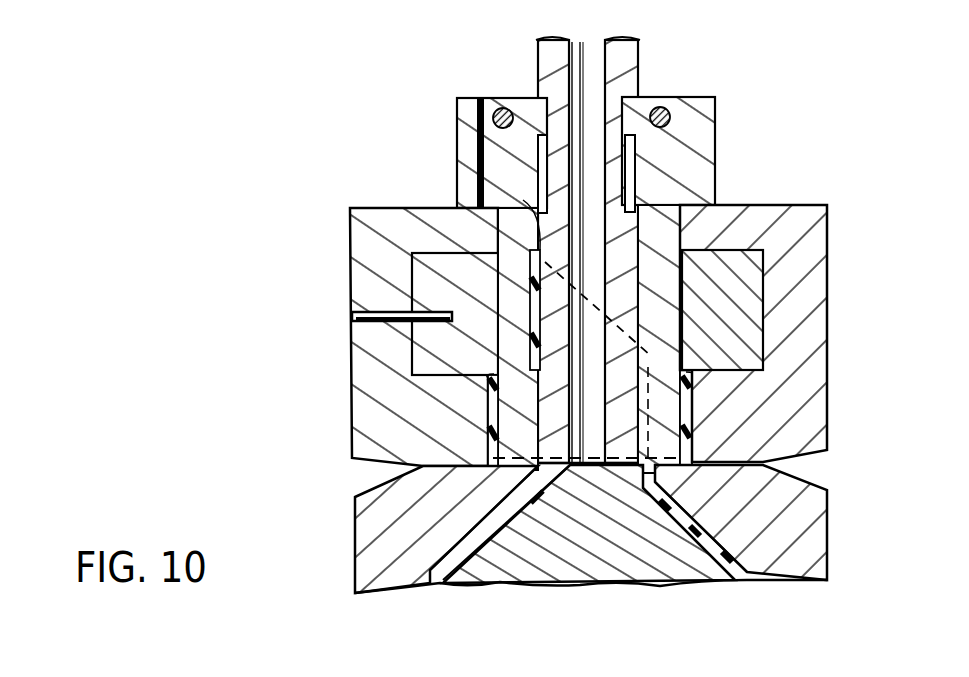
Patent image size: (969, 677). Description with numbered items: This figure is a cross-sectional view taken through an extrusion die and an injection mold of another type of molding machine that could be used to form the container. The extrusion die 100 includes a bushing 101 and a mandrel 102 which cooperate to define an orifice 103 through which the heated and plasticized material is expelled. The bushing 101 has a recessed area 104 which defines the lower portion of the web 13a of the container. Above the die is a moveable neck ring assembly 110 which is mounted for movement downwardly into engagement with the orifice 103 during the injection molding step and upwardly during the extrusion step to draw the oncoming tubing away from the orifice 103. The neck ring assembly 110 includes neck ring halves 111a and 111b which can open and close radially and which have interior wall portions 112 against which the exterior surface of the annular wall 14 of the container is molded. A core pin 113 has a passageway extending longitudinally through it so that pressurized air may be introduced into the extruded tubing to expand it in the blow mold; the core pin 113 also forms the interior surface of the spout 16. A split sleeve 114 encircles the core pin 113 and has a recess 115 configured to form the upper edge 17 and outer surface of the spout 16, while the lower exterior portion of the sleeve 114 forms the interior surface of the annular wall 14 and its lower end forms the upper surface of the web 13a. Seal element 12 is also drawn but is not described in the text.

The extrusion die 100 is at (340, 588).
The bushing 101 is at (790, 525).
The mandrel 102 is at (582, 570).
The orifice 103 is at (690, 448).
The recessed area 104 is at (478, 507).
The neck ring assembly 110 is at (746, 169).
The neck ring half 111a is at (368, 246).
The neck ring half 111b is at (795, 340).
The interior wall portions 112 is at (490, 440).
The core pin 113 is at (640, 46).
The split sleeve 114 is at (525, 106).
The recess 115 is at (527, 272).
The seal 12 is at (690, 485).
The web 13a is at (490, 458).
The annular wall 14 is at (493, 393).
The spout 16 is at (507, 308).
The upper edge 17 is at (525, 262).